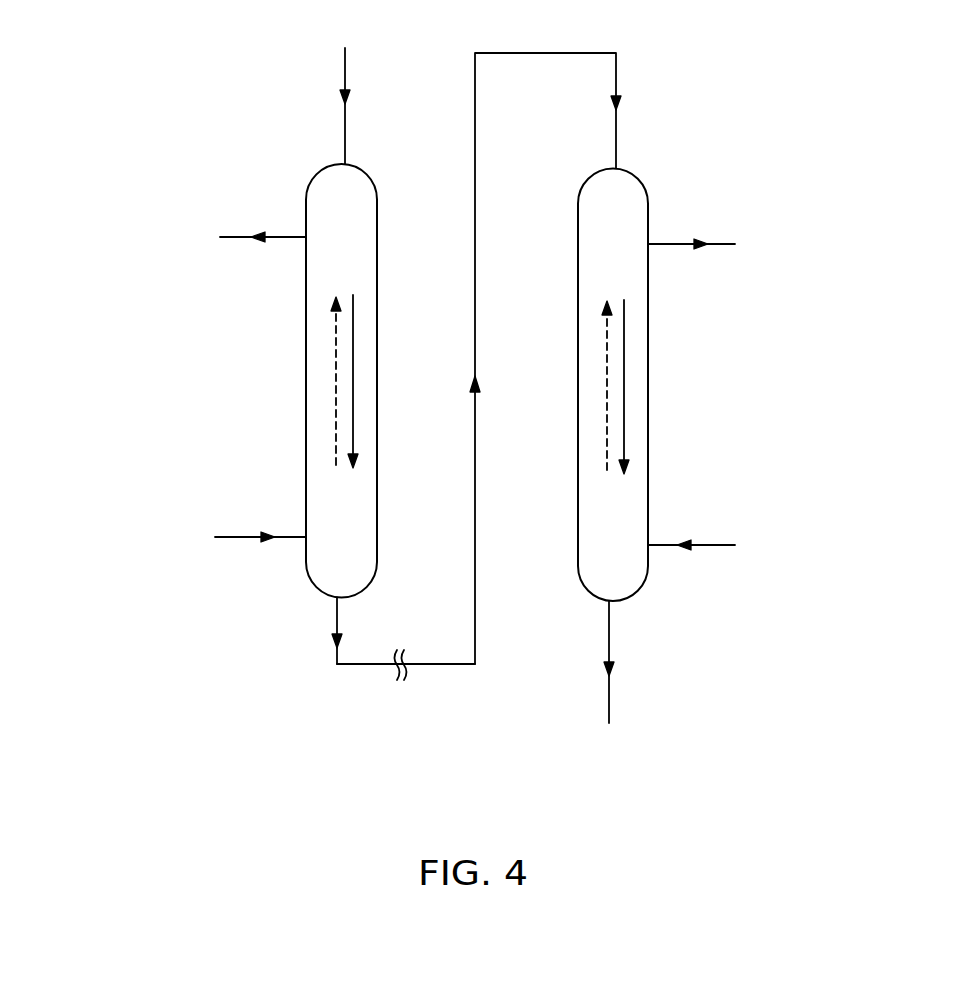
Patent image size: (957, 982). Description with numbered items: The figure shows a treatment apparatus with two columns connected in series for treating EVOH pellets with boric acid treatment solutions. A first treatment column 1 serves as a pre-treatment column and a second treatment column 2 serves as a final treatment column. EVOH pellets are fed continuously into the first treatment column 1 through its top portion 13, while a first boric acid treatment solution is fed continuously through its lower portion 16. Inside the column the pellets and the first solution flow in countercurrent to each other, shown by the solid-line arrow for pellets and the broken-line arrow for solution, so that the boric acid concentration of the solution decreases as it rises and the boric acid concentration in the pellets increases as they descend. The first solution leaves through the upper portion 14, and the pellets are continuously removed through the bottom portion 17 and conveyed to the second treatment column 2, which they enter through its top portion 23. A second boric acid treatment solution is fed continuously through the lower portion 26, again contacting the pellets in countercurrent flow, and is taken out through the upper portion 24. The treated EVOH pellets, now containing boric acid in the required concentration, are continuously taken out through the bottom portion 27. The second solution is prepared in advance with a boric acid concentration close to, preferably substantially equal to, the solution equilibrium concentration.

The first treatment column 1 is at (305, 400).
The second treatment column 2 is at (648, 408).
The top portion 13 is at (354, 160).
The upper portion 14 is at (303, 232).
The lower portion 16 is at (297, 532).
The bottom portion 17 is at (330, 602).
The top portion 23 is at (623, 165).
The upper portion 24 is at (655, 240).
The lower portion 26 is at (652, 538).
The bottom portion 27 is at (603, 608).